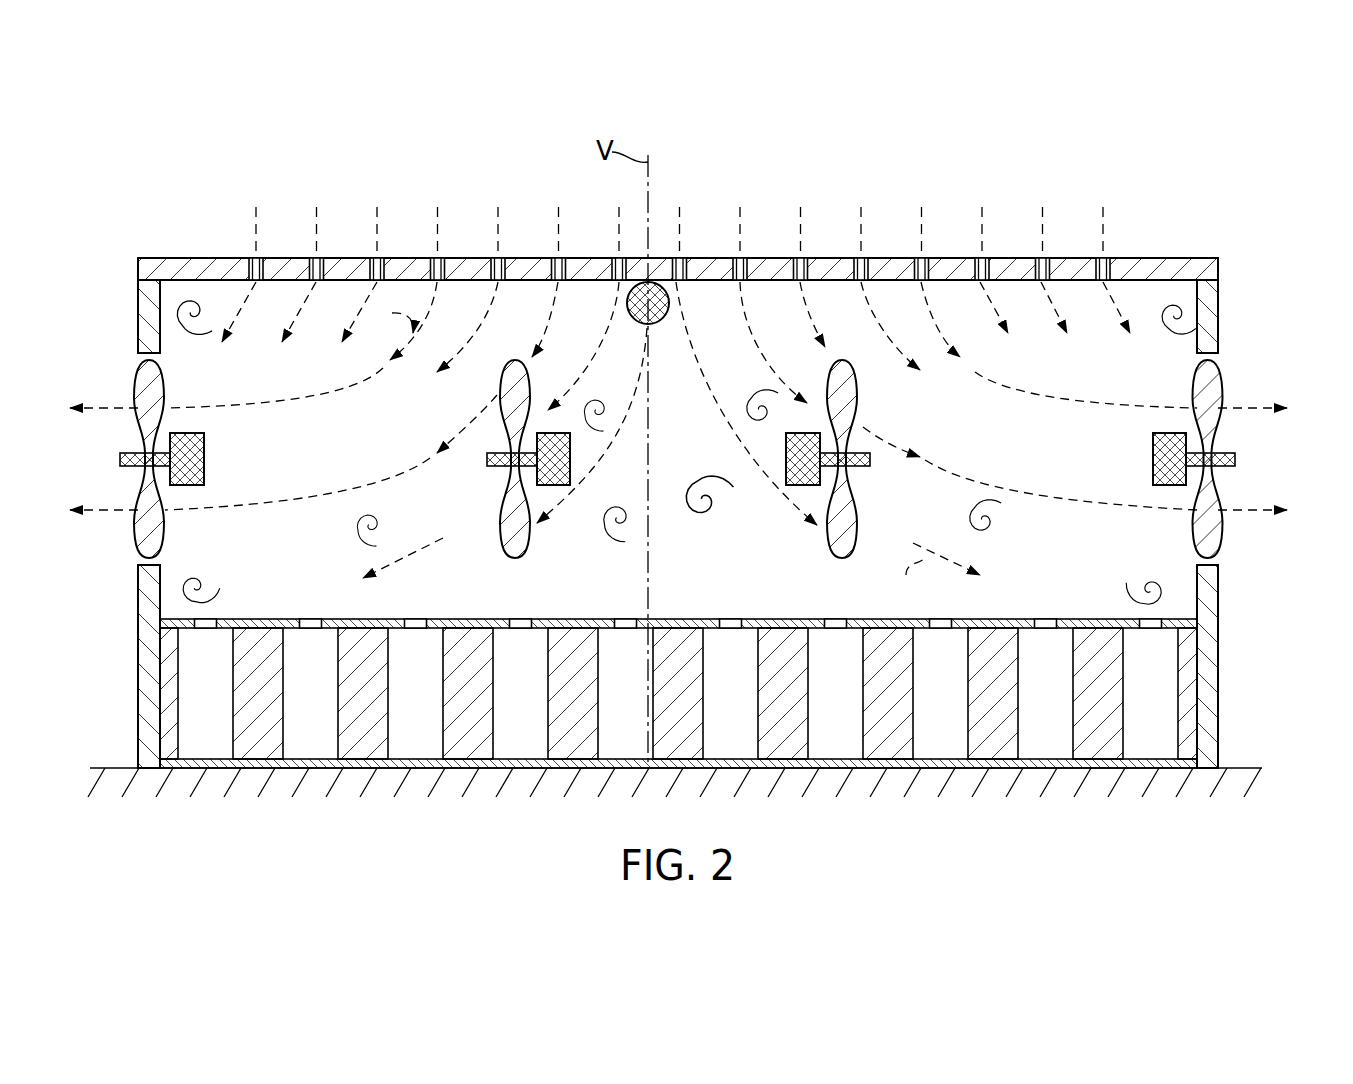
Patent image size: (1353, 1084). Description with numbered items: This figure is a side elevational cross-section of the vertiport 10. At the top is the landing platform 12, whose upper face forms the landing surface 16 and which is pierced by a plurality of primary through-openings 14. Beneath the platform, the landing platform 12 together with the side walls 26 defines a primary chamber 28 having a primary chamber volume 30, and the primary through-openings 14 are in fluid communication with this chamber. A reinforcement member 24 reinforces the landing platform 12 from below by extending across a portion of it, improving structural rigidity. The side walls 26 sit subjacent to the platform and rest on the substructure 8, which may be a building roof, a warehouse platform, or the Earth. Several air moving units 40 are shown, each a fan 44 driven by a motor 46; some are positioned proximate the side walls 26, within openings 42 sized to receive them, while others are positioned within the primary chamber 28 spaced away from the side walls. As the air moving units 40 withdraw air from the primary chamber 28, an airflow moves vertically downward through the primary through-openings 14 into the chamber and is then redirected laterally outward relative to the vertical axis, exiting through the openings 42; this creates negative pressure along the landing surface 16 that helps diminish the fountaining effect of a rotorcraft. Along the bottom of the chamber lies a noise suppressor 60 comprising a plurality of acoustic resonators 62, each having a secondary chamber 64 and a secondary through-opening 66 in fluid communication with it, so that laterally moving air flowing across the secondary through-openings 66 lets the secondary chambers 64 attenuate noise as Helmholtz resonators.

The substructure 8 is at (1252, 768).
The vertiport 10 is at (676, 442).
The landing platform 12 is at (678, 240).
The primary through-openings 14 is at (316, 270).
The landing surface 16 is at (205, 258).
The reinforcement member 24 is at (637, 322).
The side walls 26 is at (138, 598).
The primary chamber 28 is at (1105, 335).
The primary chamber volume 30 is at (1150, 360).
The air moving unit 40 is at (725, 452).
The openings 42 is at (1220, 365).
The fan 44 is at (708, 452).
The motor 46 is at (204, 460).
The noise suppressor 60 is at (1020, 270).
The acoustic resonators 62 is at (207, 750).
The secondary chamber 64 is at (678, 700).
The secondary through-opening 66 is at (622, 619).